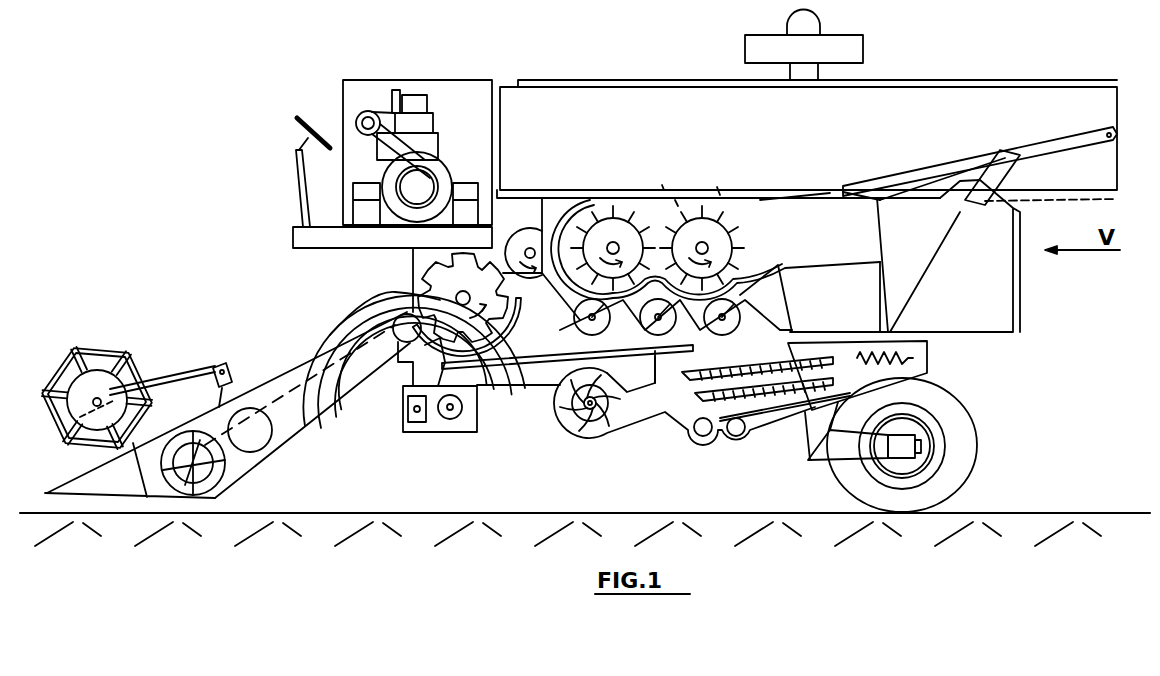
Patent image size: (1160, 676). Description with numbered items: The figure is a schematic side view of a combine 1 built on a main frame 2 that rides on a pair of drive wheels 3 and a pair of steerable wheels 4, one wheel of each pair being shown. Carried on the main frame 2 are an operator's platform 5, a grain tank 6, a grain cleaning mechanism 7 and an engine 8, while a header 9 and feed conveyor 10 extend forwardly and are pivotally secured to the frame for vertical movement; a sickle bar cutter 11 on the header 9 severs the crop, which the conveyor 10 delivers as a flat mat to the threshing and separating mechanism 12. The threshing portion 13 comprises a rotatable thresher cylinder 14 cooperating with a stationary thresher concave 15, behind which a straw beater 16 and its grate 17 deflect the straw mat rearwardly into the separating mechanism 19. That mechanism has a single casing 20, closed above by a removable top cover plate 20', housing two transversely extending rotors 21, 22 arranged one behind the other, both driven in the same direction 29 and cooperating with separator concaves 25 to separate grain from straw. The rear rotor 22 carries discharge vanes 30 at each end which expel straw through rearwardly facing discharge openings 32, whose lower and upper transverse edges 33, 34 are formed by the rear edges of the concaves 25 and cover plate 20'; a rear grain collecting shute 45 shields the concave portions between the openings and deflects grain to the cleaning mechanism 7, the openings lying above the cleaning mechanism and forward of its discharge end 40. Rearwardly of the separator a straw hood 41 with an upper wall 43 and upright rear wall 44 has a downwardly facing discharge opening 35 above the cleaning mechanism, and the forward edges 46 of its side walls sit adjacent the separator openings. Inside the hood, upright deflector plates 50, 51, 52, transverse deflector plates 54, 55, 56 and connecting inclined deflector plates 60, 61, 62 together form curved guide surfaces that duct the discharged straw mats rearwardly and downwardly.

The combine 1 is at (638, 448).
The main frame 2 is at (547, 396).
The drive wheels 3 is at (515, 485).
The steerable wheels 4 is at (832, 486).
The operator's platform 5 is at (333, 250).
The grain tank 6 is at (601, 78).
The grain cleaning mechanism 7 is at (776, 446).
The engine 8 is at (415, 95).
The header 9 is at (222, 490).
The feed conveyor 10 is at (283, 447).
The sickle bar cutter 11 is at (147, 497).
The threshing and separating mechanism 12 is at (603, 195).
The threshing portion 13 is at (396, 279).
The thresher cylinder 14 is at (413, 266).
The thresher concave 15 is at (505, 337).
The straw beater 16 is at (527, 195).
The grate 17 is at (527, 297).
The separating mechanism 19 is at (722, 178).
The casing 20 is at (695, 178).
The top cover plate 20' is at (684, 155).
The rotor 21 is at (635, 195).
The rotor 22 is at (740, 195).
The separator concaves 25 is at (607, 323).
The direction 29 is at (518, 367).
The discharge vanes 30 is at (780, 195).
The discharge openings 32 is at (776, 247).
The lower transverse edge 33 is at (790, 275).
The upper transverse edge 34 is at (785, 212).
The discharge opening 35 is at (972, 335).
The discharge end 40 is at (930, 360).
The straw hood 41 is at (1024, 232).
The upper wall 43 is at (1040, 180).
The rear wall 44 is at (1020, 292).
The rear grain collecting shute 45 is at (785, 290).
The forward edges 46 is at (793, 300).
The deflector plate 50 is at (868, 247).
The deflector plate 51 is at (920, 247).
The deflector plate 52 is at (978, 284).
The deflector plate 54 is at (880, 185).
The deflector plate 55 is at (960, 185).
The deflector plate 56 is at (1115, 199).
The deflector plate 60 is at (840, 190).
The deflector plate 61 is at (930, 188).
The deflector plate 62 is at (1080, 195).